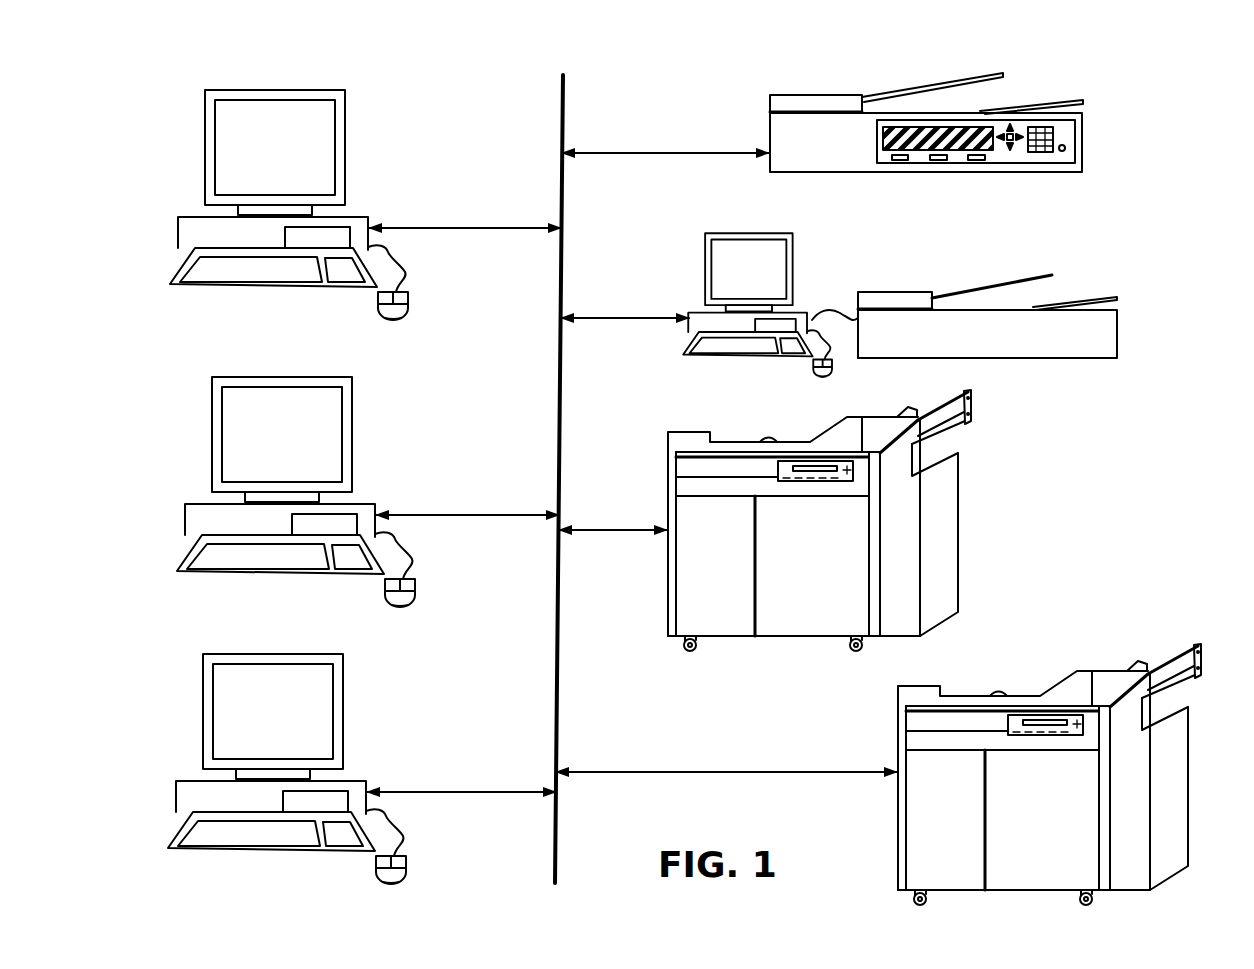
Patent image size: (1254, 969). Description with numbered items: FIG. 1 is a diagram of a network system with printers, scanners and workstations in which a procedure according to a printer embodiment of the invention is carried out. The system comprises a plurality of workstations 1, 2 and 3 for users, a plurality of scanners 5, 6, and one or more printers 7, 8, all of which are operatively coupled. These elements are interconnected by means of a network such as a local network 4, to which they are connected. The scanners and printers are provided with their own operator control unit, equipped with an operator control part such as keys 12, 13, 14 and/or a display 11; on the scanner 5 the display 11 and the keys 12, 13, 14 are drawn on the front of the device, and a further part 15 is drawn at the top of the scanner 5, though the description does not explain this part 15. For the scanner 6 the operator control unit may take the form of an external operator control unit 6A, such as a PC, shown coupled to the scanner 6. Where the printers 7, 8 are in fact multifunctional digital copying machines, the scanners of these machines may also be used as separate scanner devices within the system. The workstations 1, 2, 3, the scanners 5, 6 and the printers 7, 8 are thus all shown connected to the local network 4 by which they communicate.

The workstation 1 is at (205, 168).
The workstation 2 is at (212, 416).
The workstation 3 is at (203, 753).
The local network 4 is at (560, 583).
The scanner 5 is at (917, 138).
The scanner 6 is at (884, 292).
The external operator control unit 6A is at (770, 310).
The printer 7 is at (849, 519).
The printer 8 is at (1049, 773).
The display 11 is at (917, 152).
The key 12 is at (1010, 143).
The key 13 is at (973, 162).
The key 14 is at (1067, 145).
The document feeder tray 15 is at (862, 98).